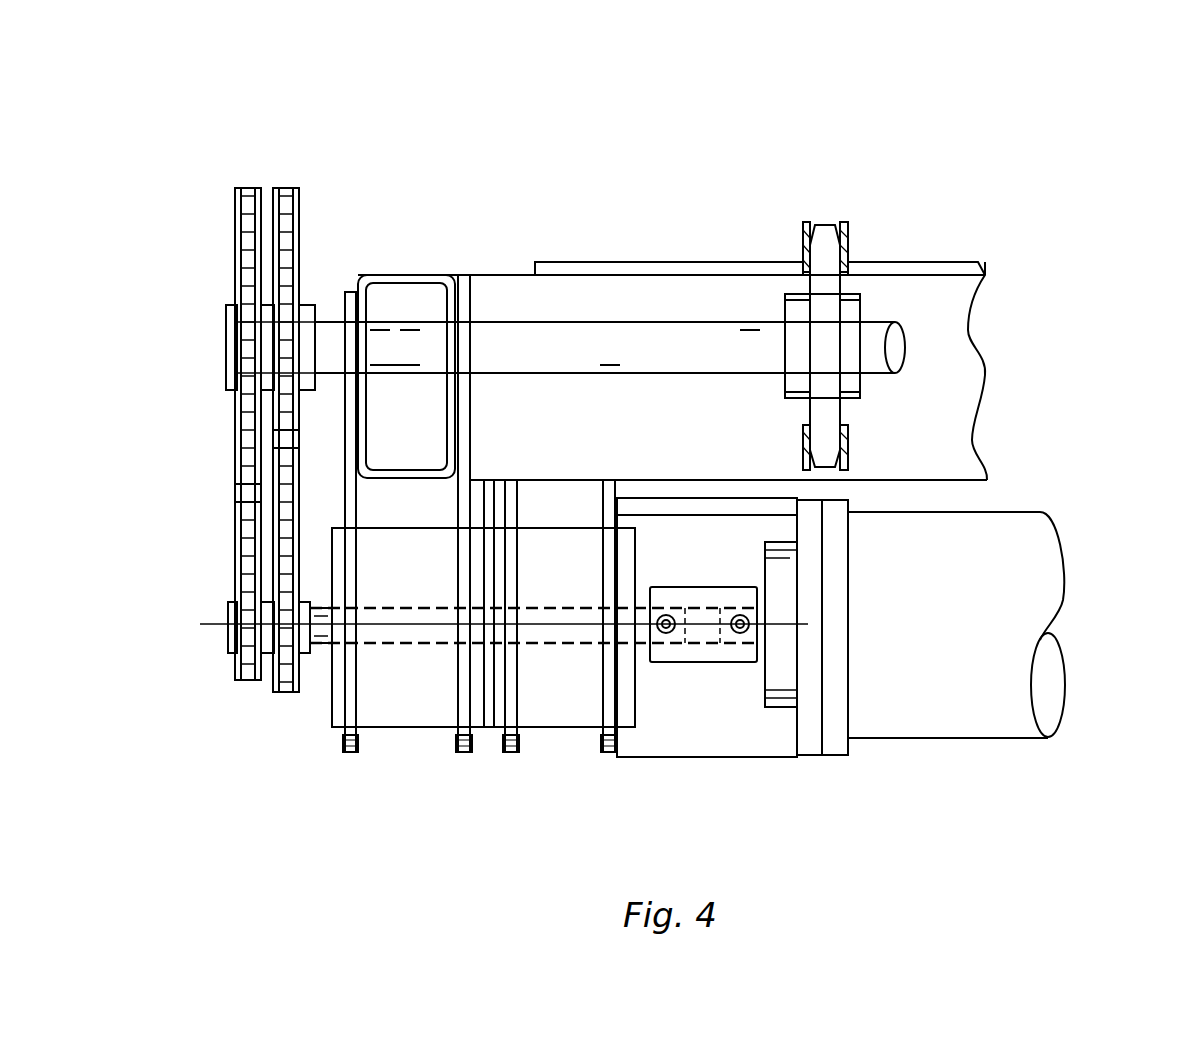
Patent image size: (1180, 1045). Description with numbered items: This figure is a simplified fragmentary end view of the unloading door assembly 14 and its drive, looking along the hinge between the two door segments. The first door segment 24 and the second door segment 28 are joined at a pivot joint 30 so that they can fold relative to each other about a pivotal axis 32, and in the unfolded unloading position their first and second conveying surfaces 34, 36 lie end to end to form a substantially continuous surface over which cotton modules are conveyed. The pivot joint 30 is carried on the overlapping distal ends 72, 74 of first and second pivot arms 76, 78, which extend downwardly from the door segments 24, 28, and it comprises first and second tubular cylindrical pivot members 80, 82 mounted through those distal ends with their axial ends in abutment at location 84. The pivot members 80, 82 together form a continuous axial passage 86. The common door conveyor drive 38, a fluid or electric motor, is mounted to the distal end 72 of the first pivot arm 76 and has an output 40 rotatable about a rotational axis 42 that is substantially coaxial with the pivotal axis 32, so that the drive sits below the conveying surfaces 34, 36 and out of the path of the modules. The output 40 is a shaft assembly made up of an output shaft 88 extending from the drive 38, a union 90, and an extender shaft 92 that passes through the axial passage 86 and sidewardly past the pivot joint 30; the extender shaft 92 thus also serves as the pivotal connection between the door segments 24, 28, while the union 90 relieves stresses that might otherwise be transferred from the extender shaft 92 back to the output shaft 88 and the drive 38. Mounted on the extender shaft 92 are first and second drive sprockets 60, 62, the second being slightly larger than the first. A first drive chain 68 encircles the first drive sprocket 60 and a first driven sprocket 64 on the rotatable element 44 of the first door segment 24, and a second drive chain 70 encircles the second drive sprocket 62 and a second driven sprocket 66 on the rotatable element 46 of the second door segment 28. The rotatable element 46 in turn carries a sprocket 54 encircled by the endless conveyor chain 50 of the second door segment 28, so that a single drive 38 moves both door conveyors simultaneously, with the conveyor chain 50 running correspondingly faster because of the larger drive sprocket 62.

The unloading door assembly 14 is at (1105, 108).
The first door segment 24 is at (753, 371).
The second door segment 28 is at (978, 380).
The pivot joint 30 is at (420, 730).
The pivotal axis 32 is at (882, 627).
The rotational axis 42 is at (808, 623).
The first conveying surface 34 is at (760, 225).
The second conveying surface 36 is at (680, 262).
The door conveyor drive 38 is at (990, 740).
The output 40 is at (318, 645).
The rotatable element 44 is at (702, 339).
The rotatable element 46 is at (903, 318).
The endless conveyor chain 50 is at (850, 228).
The sprocket 54 is at (820, 225).
The first drive sprocket 60 is at (246, 680).
The second drive sprocket 62 is at (286, 692).
The first driven sprocket 64 is at (250, 188).
The second driven sprocket 66 is at (287, 188).
The first drive chain 68 is at (240, 495).
The second drive chain 70 is at (275, 440).
The distal end 72 is at (560, 666).
The first pivot arm 76 is at (605, 752).
The distal end 74 is at (368, 572).
The second pivot arm 78 is at (345, 752).
The first tubular cylindrical pivot member 80 is at (563, 730).
The second tubular cylindrical pivot member 82 is at (380, 730).
The location of abutment 84 is at (485, 505).
The axial passage 86 is at (533, 627).
The output shaft 88 is at (762, 650).
The union 90 is at (700, 587).
The extender shaft 92 is at (560, 608).